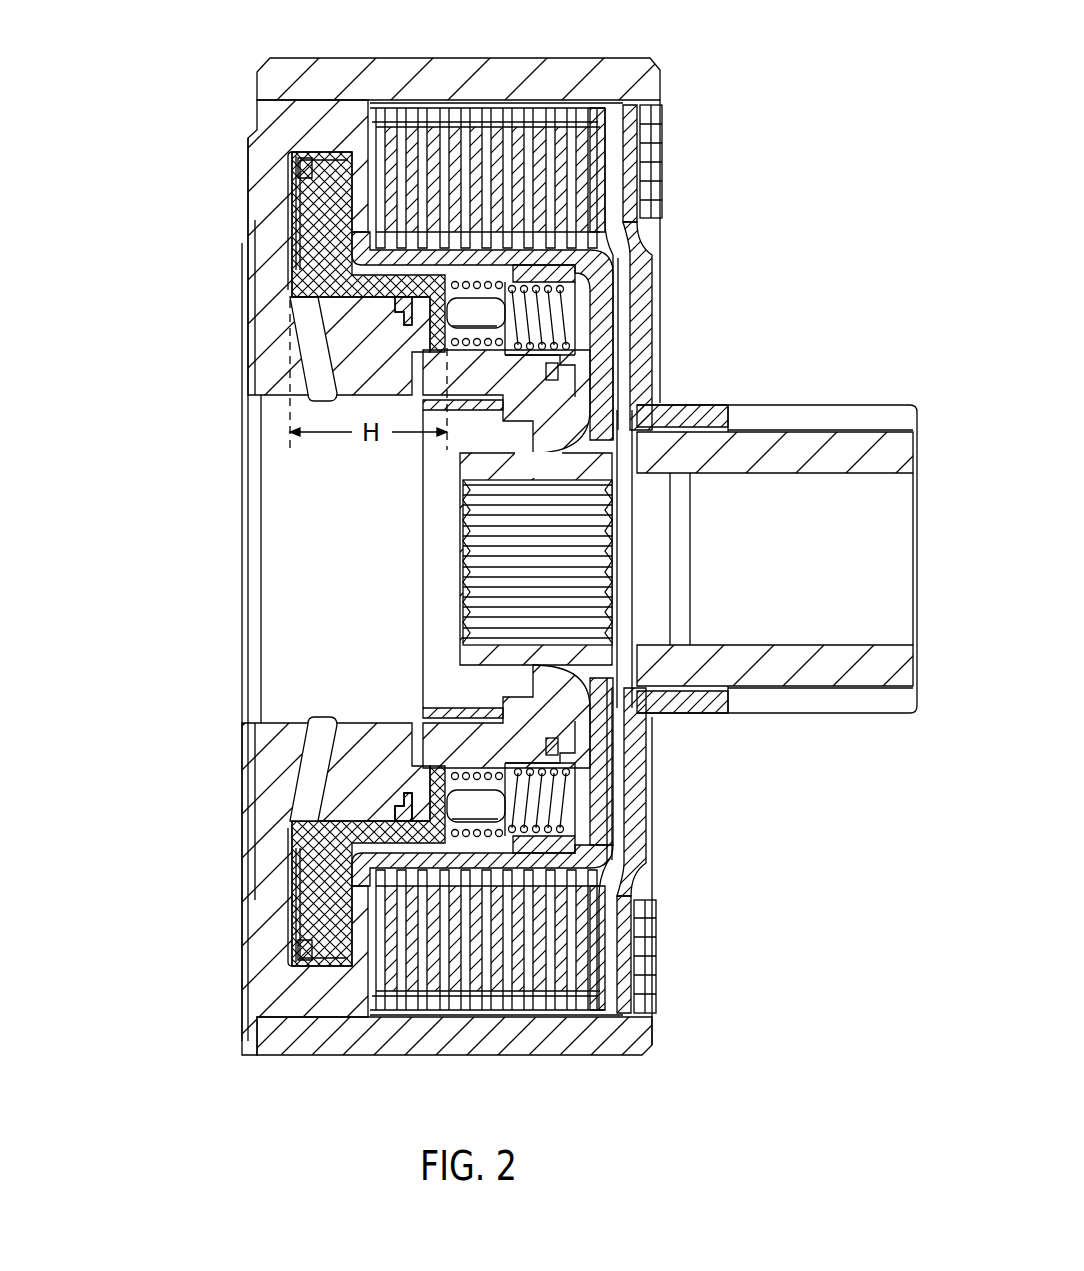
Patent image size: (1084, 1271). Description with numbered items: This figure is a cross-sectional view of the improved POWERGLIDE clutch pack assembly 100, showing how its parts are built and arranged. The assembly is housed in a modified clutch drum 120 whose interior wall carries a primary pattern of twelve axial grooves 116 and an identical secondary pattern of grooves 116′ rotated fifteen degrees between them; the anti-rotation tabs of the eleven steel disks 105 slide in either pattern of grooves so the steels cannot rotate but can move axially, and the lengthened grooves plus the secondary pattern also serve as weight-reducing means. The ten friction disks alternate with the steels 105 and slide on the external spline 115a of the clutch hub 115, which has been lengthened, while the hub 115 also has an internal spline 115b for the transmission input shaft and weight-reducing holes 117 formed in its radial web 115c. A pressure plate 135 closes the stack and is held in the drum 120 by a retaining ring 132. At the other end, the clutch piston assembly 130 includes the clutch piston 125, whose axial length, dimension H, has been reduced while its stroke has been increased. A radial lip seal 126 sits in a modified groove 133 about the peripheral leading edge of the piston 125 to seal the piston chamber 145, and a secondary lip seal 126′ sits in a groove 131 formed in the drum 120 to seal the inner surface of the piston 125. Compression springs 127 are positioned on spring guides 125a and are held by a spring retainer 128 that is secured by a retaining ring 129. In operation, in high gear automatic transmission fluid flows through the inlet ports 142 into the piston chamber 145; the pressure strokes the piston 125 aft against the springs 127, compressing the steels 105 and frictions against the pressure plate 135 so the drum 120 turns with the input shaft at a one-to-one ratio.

The clutch pack assembly 100 is at (354, 984).
The steel disk 105 is at (545, 108).
The clutch hub 115 is at (556, 477).
The external spline 115a is at (598, 873).
The internal spline 115b is at (612, 565).
The pulley flange wall 115c is at (608, 840).
The axial grooves 116 is at (362, 105).
The secondary grooves 116′ is at (648, 877).
The weight-reducing holes 117 is at (602, 394).
The clutch drum 120 is at (218, 551).
The clutch piston 125 is at (290, 265).
The spring guides 125a is at (476, 560).
The radial lip seal 126 is at (290, 162).
The secondary lip seal 126′ is at (398, 300).
The compression springs 127 is at (567, 312).
The spring retainer 128 is at (580, 765).
The retaining ring 129 is at (552, 372).
The clutch piston assembly 130 is at (380, 785).
The groove 131 is at (396, 793).
The retaining ring 132 is at (640, 192).
The groove 133 is at (292, 912).
The pressure plate 135 is at (620, 233).
The inlet ports 142 is at (300, 778).
The piston chamber 145 is at (292, 196).